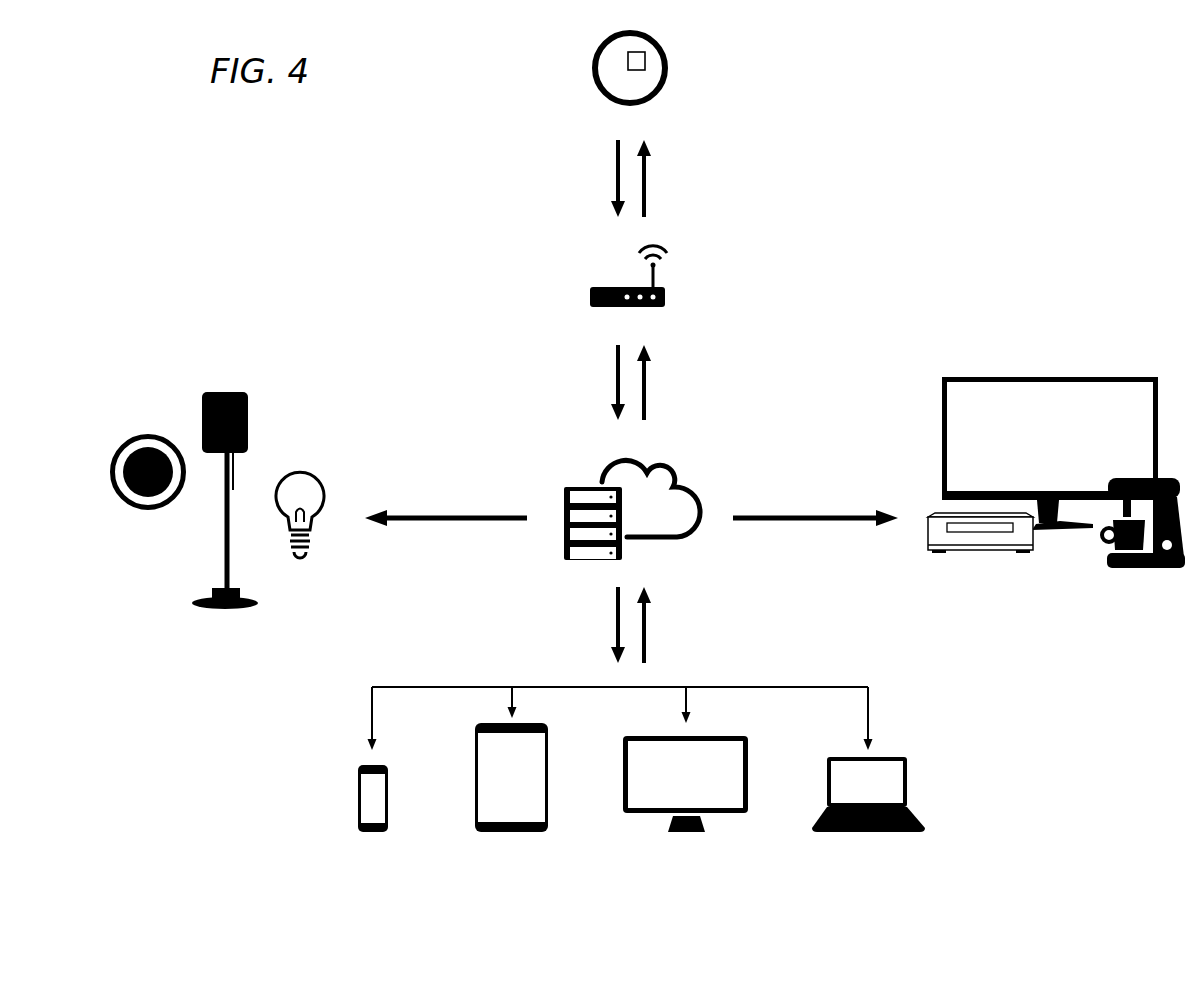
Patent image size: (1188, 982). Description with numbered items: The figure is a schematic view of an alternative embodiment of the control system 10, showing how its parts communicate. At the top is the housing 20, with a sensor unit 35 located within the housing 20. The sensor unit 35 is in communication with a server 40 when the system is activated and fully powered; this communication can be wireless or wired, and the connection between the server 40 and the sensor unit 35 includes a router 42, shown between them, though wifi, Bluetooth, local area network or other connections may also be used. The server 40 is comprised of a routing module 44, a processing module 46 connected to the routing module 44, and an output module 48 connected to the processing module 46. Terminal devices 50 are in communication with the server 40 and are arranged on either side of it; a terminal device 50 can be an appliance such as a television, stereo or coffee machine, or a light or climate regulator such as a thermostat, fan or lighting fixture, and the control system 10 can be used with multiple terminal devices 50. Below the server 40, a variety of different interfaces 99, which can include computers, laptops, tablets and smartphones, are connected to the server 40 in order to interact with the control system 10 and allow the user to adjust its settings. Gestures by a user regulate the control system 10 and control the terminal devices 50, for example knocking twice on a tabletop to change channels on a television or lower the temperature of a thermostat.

The control system 10 is at (392, 213).
The housing 20 is at (580, 54).
The sensor unit 35 is at (632, 68).
The router 42 is at (692, 272).
The server 40 is at (577, 463).
The routing module 44 is at (573, 493).
The processing module 46 is at (577, 513).
The output module 48 is at (575, 532).
The terminal device 50 is at (233, 358).
The interfaces 99 is at (880, 668).